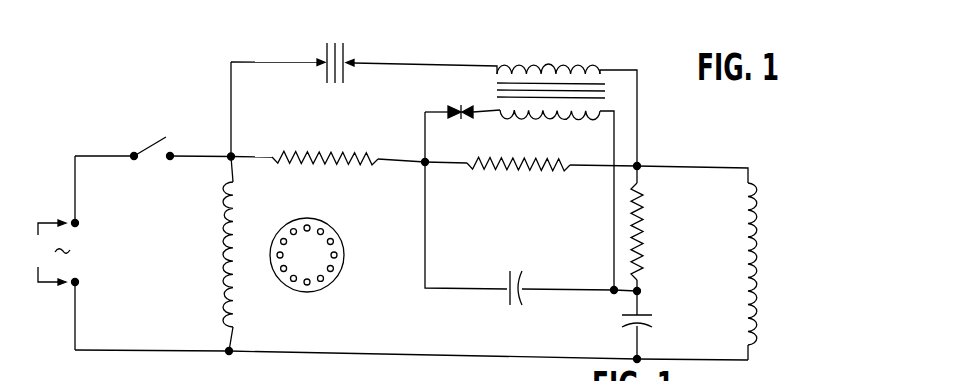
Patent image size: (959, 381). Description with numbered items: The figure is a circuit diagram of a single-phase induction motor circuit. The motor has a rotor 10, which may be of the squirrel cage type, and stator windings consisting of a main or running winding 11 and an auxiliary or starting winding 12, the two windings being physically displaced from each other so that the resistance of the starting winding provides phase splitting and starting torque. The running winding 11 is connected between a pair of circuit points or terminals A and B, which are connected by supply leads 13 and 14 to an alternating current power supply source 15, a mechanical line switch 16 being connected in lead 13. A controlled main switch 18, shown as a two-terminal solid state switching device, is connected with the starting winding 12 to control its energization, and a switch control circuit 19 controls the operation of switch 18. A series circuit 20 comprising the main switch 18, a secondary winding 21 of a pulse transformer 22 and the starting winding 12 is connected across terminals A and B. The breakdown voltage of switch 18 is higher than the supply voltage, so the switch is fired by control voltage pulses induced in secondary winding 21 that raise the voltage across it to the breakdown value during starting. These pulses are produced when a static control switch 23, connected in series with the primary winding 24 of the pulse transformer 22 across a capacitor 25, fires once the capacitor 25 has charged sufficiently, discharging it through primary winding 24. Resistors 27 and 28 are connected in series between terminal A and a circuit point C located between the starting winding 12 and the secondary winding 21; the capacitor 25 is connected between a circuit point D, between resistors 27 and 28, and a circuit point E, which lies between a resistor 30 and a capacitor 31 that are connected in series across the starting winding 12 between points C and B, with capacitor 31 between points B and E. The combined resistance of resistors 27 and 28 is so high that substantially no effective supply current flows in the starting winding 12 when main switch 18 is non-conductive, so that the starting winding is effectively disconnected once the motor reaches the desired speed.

The rotor 10 is at (312, 292).
The main or running winding 11 is at (236, 190).
The auxiliary or starting winding 12 is at (758, 245).
The supply lead 13 is at (198, 157).
The supply lead 14 is at (173, 353).
The alternating current power supply source 15 is at (70, 250).
The mechanical line switch 16 is at (152, 147).
The controlled main switch 18 is at (346, 51).
The switch control circuit 19 is at (313, 118).
The series circuit 20 is at (295, 58).
The secondary winding 21 is at (576, 63).
The pulse transformer 22 is at (491, 88).
The control switch 23 is at (463, 115).
The primary winding 24 is at (563, 122).
The capacitor 25 is at (515, 268).
The resistor 27 is at (333, 155).
The resistor 28 is at (537, 168).
The resistor 30 is at (642, 222).
The capacitor 31 is at (654, 322).
The circuit point or terminal A is at (233, 155).
The circuit point or terminal B is at (229, 355).
The circuit point or terminal C is at (640, 163).
The circuit point or terminal D is at (424, 163).
The circuit point or terminal E is at (643, 290).